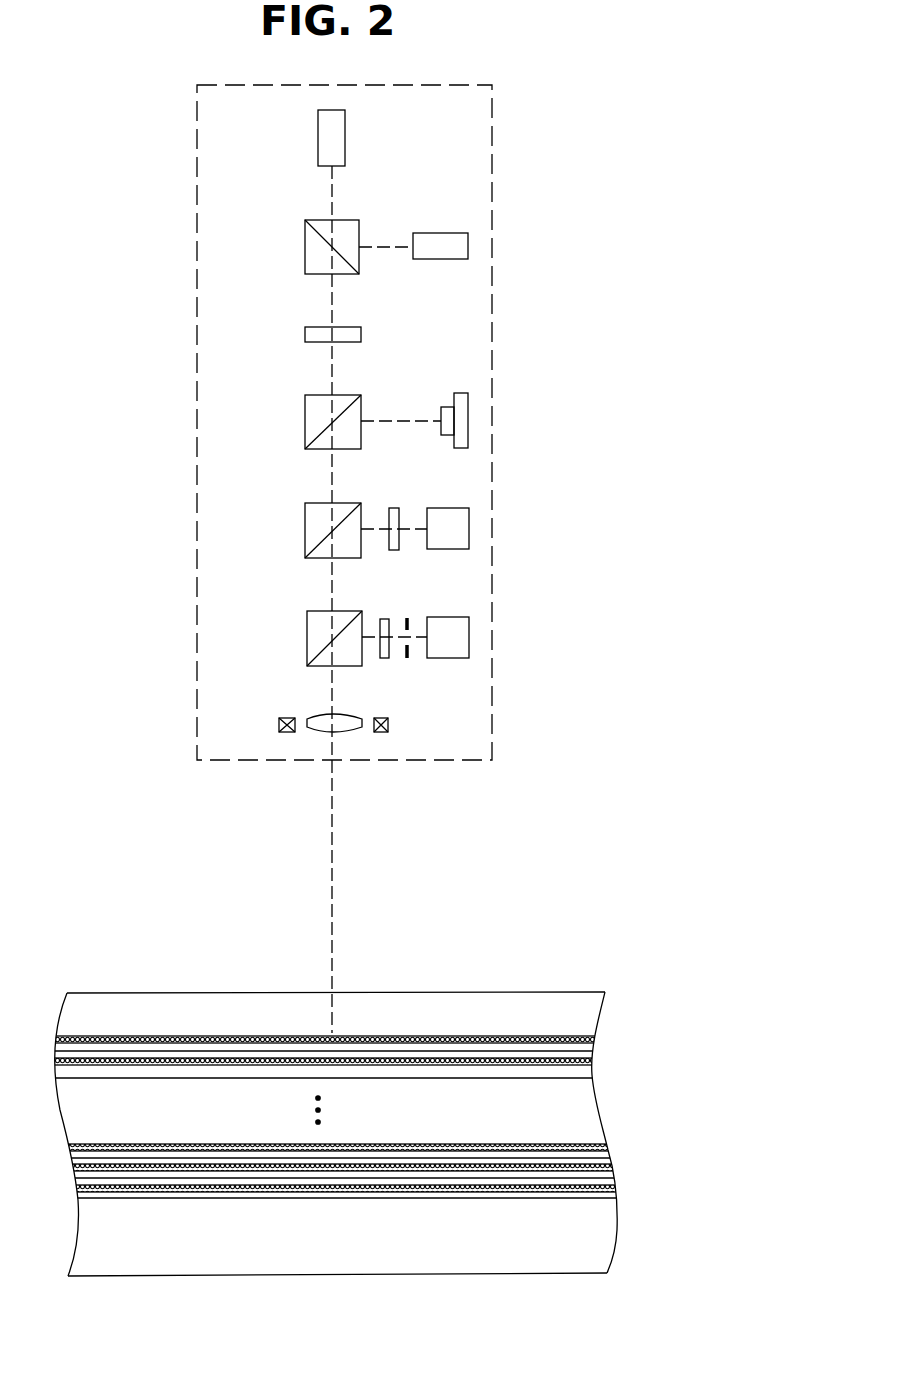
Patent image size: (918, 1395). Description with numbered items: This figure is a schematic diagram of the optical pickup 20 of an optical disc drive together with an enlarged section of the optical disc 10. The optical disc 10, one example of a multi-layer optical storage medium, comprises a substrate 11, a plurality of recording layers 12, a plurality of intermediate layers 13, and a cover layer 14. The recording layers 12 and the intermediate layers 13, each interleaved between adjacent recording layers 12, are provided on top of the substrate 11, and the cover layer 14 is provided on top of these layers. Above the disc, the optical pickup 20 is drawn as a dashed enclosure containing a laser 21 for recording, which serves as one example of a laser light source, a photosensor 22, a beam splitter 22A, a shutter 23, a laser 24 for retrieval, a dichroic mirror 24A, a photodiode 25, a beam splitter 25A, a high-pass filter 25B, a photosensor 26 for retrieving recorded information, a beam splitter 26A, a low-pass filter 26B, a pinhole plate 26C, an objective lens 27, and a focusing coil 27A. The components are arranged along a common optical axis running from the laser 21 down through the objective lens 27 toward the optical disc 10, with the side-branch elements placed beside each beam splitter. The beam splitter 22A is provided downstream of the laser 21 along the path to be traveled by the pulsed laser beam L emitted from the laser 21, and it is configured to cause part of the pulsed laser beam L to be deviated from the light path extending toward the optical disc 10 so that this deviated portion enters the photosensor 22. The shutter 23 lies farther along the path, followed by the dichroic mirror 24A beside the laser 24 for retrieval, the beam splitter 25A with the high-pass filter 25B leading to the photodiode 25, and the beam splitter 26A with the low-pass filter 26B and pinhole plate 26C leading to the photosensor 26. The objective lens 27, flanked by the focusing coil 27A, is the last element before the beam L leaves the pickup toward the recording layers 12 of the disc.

The optical disc 10 is at (518, 962).
The substrate 11 is at (600, 1235).
The recording layers 12 is at (593, 1038).
The intermediate layers 13 is at (587, 1070).
The cover layer 14 is at (588, 1004).
The optical pickup 20 is at (449, 80).
The laser for recording 21 is at (345, 130).
The photosensor 22 is at (450, 233).
The beam splitter 22A is at (305, 238).
The shutter 23 is at (305, 334).
The laser for retrieval 24 is at (461, 393).
The dichroic mirror 24A is at (305, 413).
The photodiode 25 is at (448, 512).
The beam splitter 25A is at (305, 523).
The high-pass filter 25B is at (394, 508).
The photosensor for retrieving recorded information 26 is at (446, 617).
The beam splitter 26A is at (307, 631).
The low-pass filter 26B is at (384, 619).
The pinhole plate 26C is at (410, 658).
The objective lens 27 is at (318, 715).
The focusing coil 27A is at (388, 725).
The pulsed laser beam L is at (330, 190).